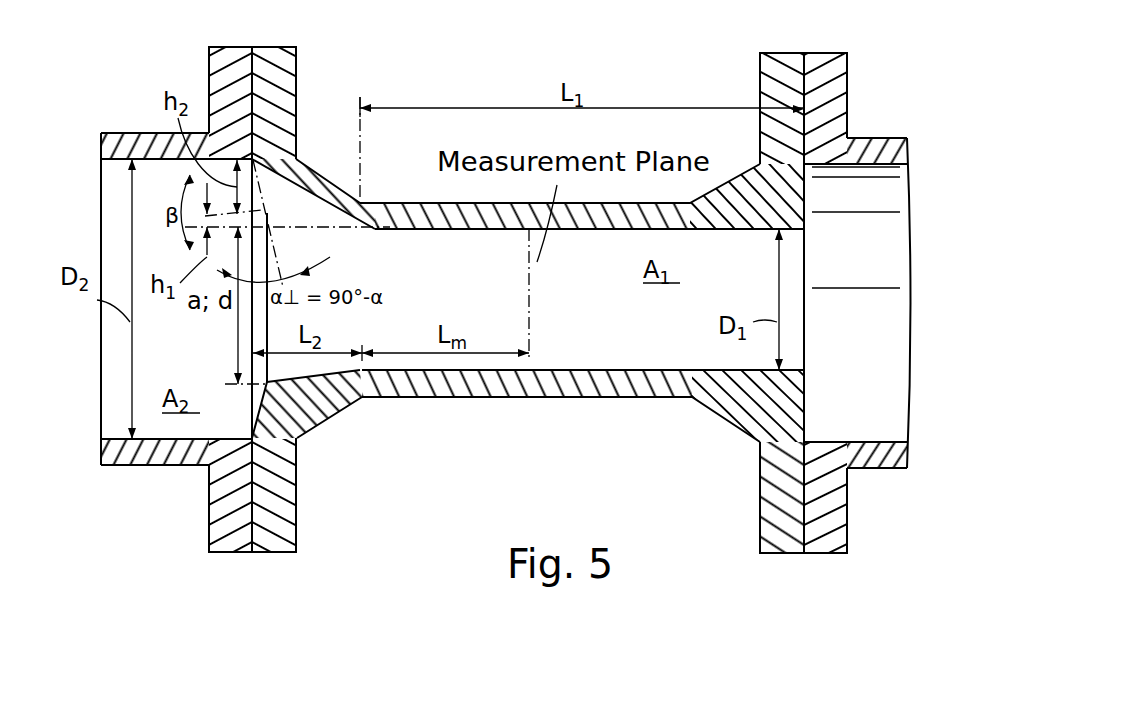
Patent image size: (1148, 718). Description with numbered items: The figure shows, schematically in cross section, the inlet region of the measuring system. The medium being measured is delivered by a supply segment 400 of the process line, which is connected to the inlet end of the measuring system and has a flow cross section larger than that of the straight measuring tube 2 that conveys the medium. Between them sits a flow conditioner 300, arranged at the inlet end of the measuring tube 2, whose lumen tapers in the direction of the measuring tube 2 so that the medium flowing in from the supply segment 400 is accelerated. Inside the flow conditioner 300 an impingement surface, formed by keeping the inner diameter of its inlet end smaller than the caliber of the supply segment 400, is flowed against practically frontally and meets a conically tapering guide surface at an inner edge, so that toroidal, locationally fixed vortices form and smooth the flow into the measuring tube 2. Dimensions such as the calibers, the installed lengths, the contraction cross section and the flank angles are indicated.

The measuring tube 2 is at (472, 383).
The flow conditioner 300 is at (318, 398).
The supply segment 400 is at (148, 450).